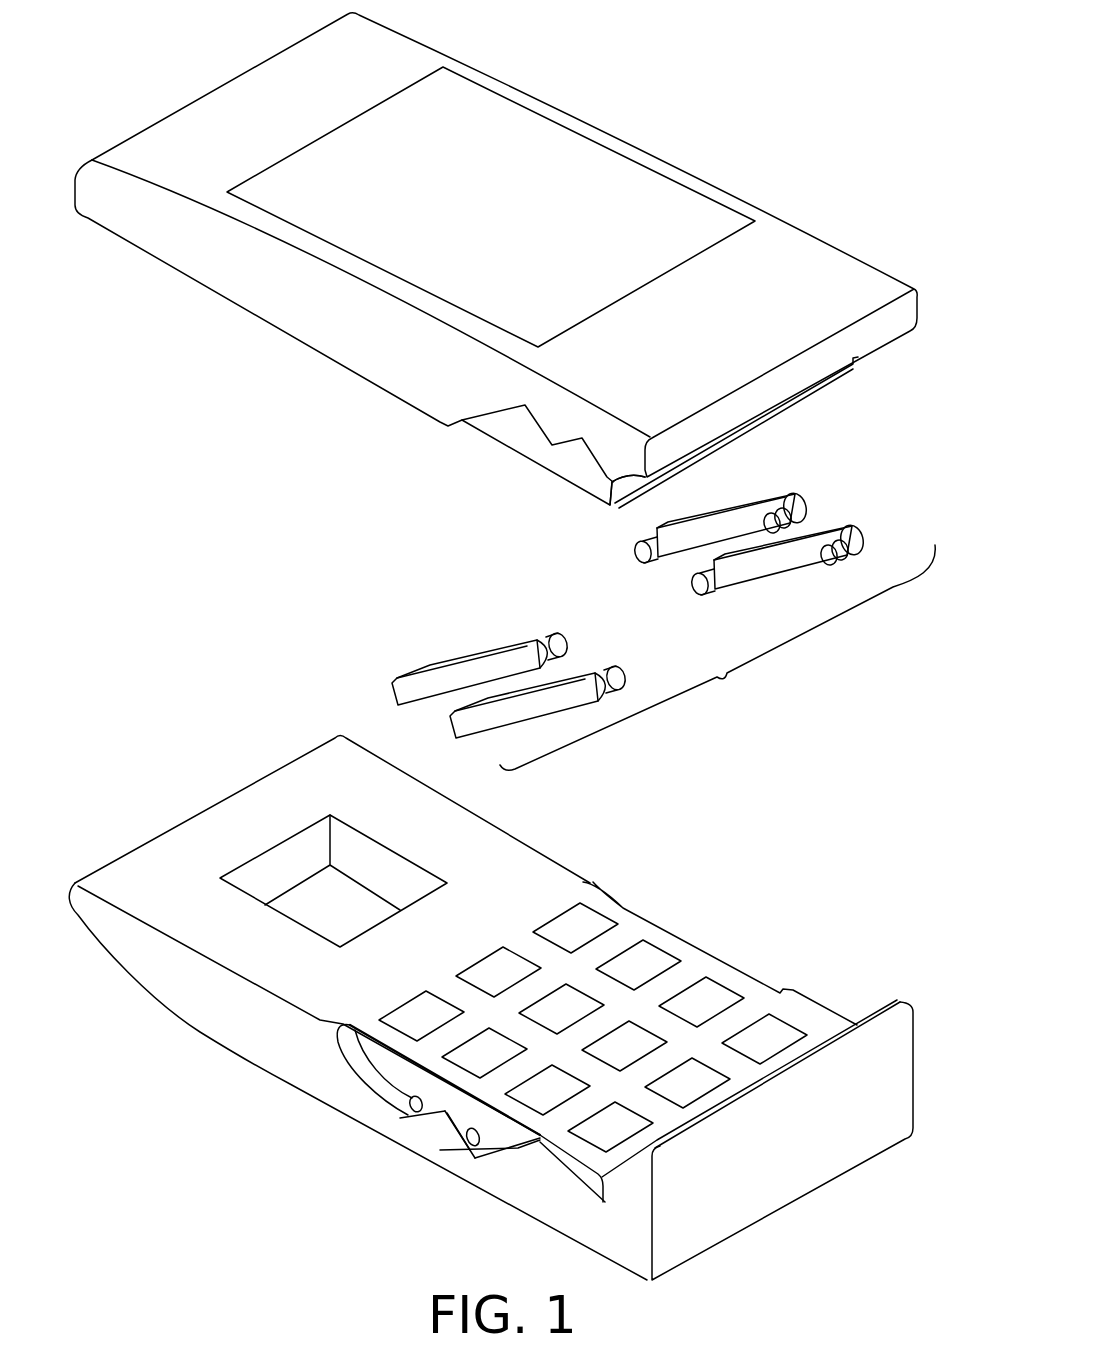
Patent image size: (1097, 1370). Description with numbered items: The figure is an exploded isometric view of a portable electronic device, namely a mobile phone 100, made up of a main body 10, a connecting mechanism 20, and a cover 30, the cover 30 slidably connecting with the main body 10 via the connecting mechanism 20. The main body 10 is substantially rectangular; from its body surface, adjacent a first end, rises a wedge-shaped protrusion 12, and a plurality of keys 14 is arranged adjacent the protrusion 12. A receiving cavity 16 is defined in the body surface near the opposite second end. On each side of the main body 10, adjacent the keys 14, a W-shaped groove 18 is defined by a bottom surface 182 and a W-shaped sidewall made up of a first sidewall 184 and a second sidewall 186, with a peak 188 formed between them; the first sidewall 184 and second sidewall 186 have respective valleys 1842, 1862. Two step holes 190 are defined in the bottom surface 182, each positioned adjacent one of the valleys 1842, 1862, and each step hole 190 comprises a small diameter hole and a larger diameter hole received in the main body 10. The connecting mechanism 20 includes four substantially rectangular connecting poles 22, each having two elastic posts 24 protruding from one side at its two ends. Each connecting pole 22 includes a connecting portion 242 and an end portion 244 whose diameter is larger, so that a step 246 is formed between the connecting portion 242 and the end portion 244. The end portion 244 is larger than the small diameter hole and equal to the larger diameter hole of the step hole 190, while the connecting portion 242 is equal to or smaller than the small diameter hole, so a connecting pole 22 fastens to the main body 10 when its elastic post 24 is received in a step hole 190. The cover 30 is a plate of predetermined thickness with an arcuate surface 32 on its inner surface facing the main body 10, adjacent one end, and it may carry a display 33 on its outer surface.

The mobile phone 100 is at (603, 26).
The cover 30 is at (618, 105).
The display 33 is at (687, 220).
The arcuate surface 32 is at (637, 484).
The connecting mechanism 20 is at (717, 657).
The connecting pole 22 is at (865, 540).
The connecting portion 242 is at (825, 540).
The end portion 244 is at (827, 567).
The step 246 is at (770, 502).
The elastic post 24 is at (550, 633).
The main body 10 is at (185, 1026).
The wedge-shaped protrusion 12 is at (900, 1003).
The keys 14 is at (645, 960).
The receiving cavity 16 is at (285, 875).
The W-shaped groove 18 is at (440, 1155).
The bottom surface 182 is at (385, 1062).
The first sidewall 184 is at (503, 1147).
The valley 1842 is at (443, 1132).
The second sidewall 186 is at (350, 1047).
The valley 1862 is at (412, 1117).
The peak 188 is at (430, 1125).
The step hole 190 is at (408, 1105).